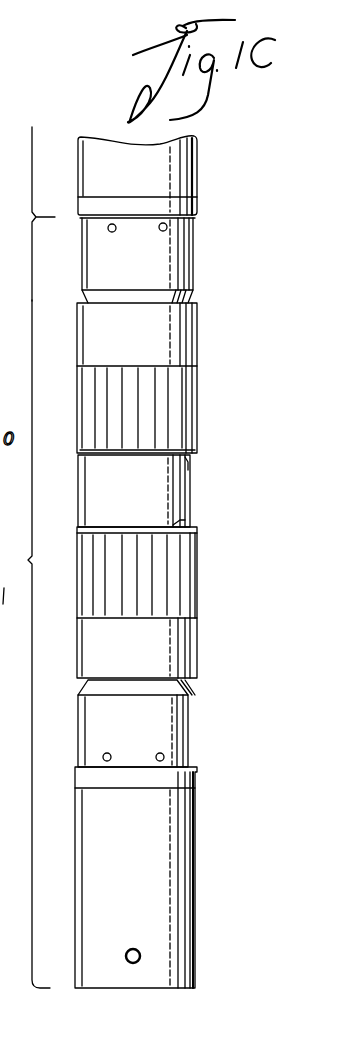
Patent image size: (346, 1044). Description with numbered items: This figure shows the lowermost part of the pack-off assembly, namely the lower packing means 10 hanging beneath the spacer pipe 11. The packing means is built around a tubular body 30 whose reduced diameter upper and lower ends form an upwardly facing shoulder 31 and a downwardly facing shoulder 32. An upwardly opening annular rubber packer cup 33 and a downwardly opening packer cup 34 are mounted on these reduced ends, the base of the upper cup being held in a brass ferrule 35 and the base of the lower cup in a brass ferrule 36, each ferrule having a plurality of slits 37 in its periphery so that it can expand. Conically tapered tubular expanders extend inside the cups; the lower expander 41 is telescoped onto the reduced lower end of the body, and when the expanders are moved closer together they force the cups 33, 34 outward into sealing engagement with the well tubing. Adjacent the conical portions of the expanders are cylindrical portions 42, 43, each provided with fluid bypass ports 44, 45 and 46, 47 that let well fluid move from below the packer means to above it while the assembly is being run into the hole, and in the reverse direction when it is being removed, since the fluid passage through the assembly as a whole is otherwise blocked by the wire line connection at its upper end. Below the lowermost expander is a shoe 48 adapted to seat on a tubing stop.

The spacer pipe 11 is at (112, 155).
The lower packing means 10 is at (17, 435).
The cylindrical portion 42 is at (193, 272).
The fluid bypass port 44 is at (112, 232).
The fluid bypass port 45 is at (160, 230).
The upper packer cup 33 is at (197, 343).
The upper ferrule 35 is at (197, 418).
The tubular body 30 is at (146, 499).
The upwardly facing shoulder 31 is at (188, 470).
The downwardly facing shoulder 32 is at (172, 522).
The lower ferrule 36 is at (197, 548).
The slits 37 is at (170, 586).
The lower packer cup 34 is at (197, 652).
The lower expander 41 is at (188, 690).
The cylindrical portion 43 is at (178, 713).
The fluid bypass port 46 is at (107, 753).
The fluid bypass port 47 is at (164, 756).
The shoe 48 is at (195, 888).